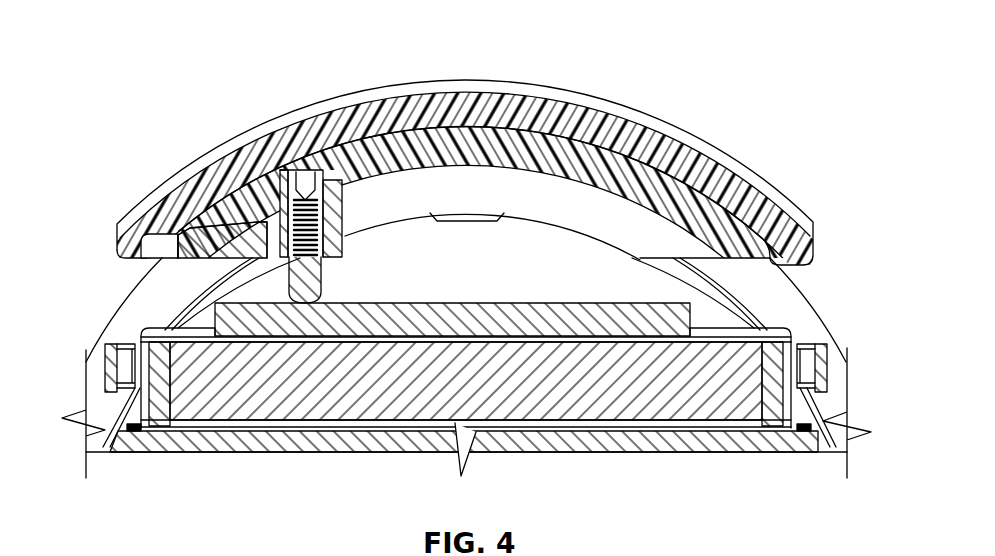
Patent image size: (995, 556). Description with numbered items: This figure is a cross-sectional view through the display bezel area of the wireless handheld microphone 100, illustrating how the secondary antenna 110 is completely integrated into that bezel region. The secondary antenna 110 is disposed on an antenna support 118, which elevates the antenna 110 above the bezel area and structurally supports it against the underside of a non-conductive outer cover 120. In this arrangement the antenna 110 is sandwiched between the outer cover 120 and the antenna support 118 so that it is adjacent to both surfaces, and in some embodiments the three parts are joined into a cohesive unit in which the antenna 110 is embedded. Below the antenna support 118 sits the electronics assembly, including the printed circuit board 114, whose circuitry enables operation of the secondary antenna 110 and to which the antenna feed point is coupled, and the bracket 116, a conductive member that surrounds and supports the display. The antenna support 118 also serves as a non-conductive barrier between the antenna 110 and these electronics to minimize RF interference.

The wireless handheld microphone 100 is at (233, 93).
The secondary antenna 110 is at (543, 134).
The non-conductive outer cover 120 is at (322, 127).
The antenna support 118 is at (155, 242).
The bracket 116 is at (163, 326).
The printed circuit board 114 is at (588, 320).